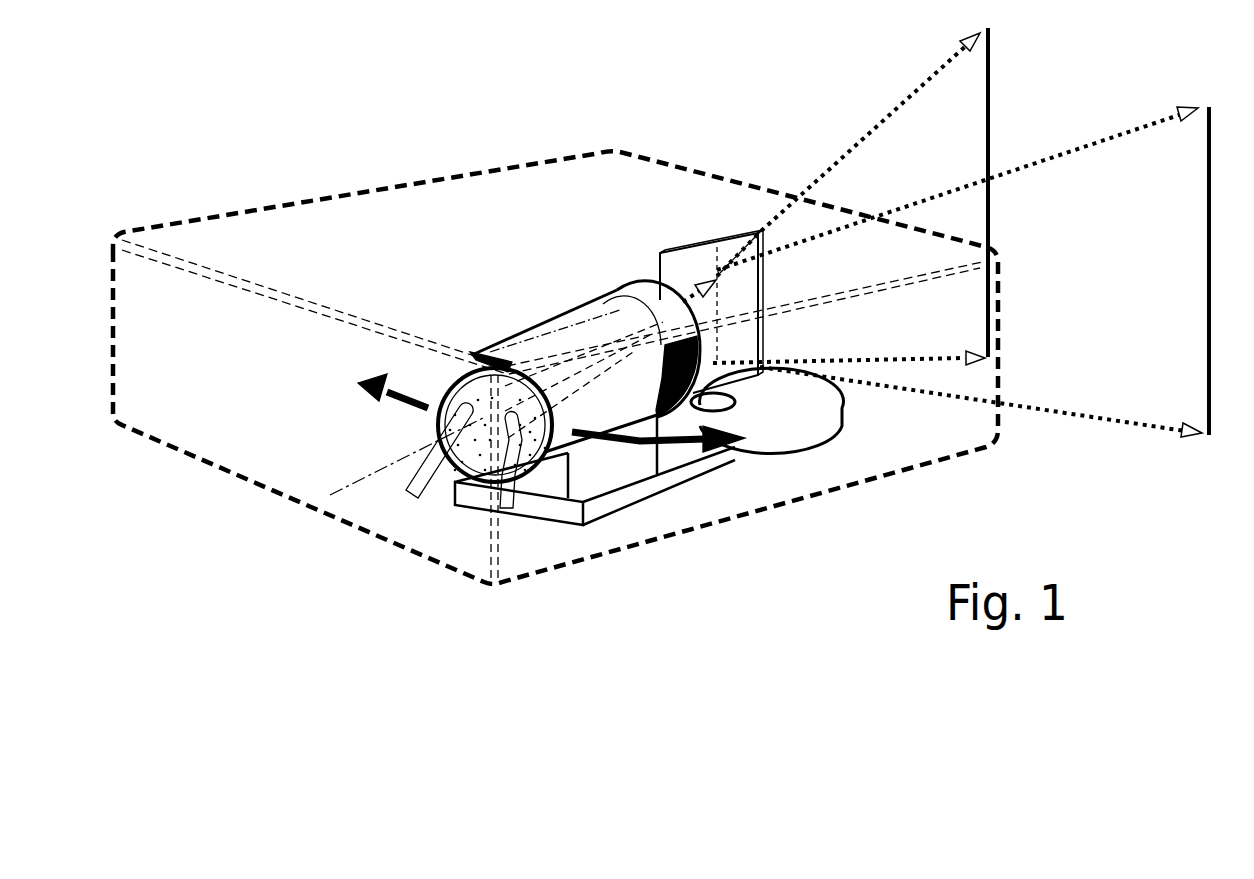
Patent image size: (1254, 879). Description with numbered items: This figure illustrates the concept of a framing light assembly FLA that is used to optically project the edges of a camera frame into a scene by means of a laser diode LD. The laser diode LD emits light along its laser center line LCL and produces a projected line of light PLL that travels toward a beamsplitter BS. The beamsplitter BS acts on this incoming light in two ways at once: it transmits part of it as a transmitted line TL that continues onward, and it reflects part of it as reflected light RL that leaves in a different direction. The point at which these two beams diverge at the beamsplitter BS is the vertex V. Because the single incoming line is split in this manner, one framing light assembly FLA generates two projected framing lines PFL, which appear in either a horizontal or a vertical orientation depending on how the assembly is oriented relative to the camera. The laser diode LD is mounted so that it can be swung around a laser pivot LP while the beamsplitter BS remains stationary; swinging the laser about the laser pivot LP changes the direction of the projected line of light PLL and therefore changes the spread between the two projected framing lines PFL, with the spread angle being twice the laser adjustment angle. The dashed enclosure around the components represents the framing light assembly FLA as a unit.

The framing light assembly FLA is at (332, 145).
The laser diode LD is at (553, 315).
The projected line of light PLL is at (693, 293).
The beamsplitter BS is at (727, 248).
The vertex V is at (723, 343).
The transmitted line TL is at (897, 108).
The reflected light RL is at (1048, 167).
The projected framing line PFL is at (990, 87).
The laser pivot LP is at (735, 405).
The laser center line LCL is at (360, 478).